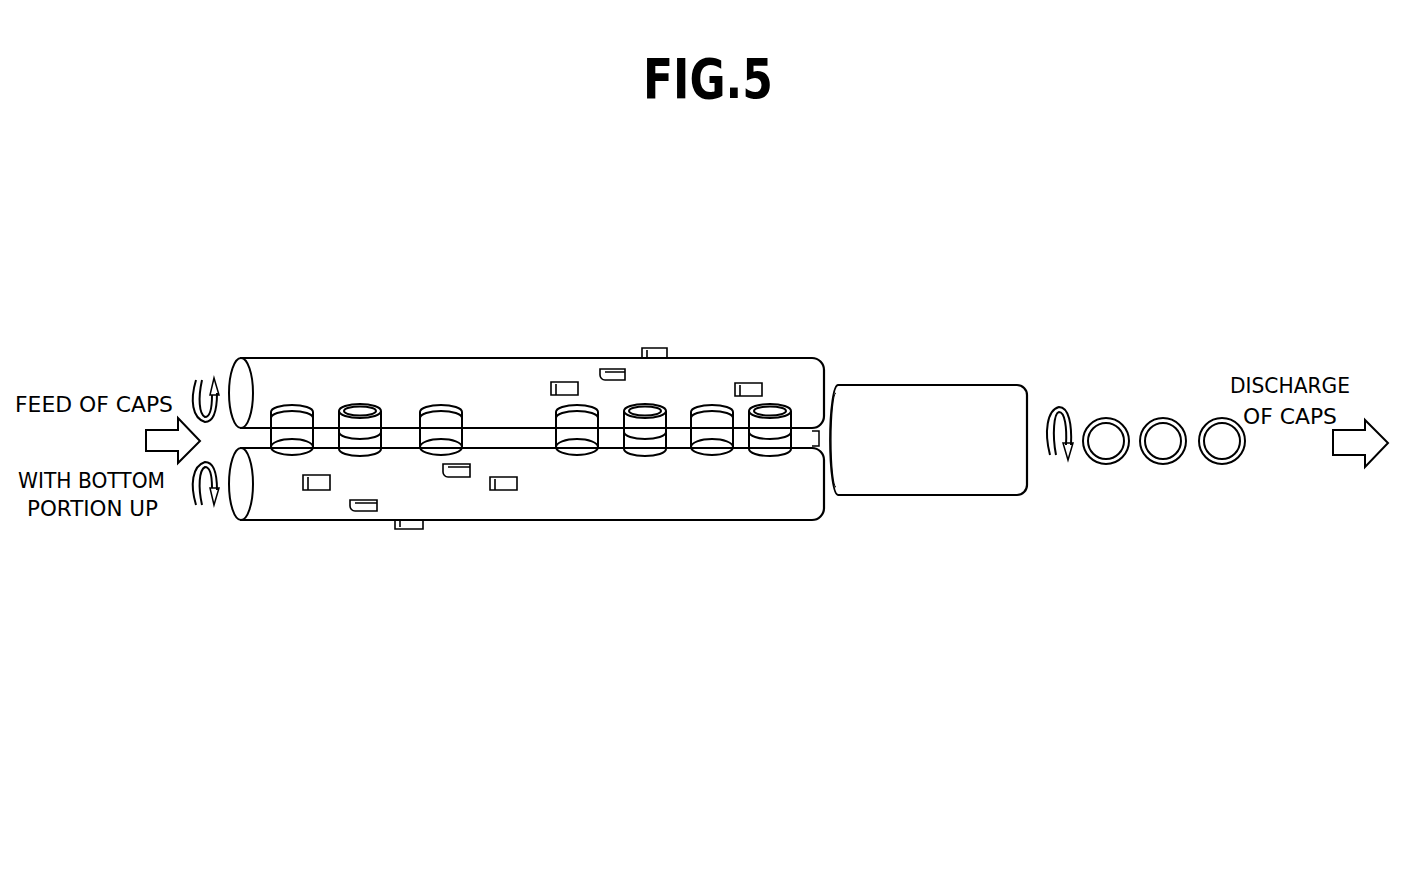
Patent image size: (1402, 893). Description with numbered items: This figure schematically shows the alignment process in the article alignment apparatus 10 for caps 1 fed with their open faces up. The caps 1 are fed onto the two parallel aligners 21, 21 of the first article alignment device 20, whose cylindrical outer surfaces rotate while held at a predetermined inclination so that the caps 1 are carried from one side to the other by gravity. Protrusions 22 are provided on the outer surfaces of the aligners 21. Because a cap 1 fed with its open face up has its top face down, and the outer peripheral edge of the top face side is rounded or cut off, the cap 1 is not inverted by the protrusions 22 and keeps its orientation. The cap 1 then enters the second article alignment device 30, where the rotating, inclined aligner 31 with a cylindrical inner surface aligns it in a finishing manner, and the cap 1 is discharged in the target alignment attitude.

The cap 1 is at (290, 405).
The article alignment apparatus 10 is at (511, 292).
The first article alignment device 20 is at (363, 346).
The aligner 21 is at (450, 370).
The protrusion 22 is at (614, 366).
The second article alignment device 30 is at (928, 362).
The aligner 31 is at (978, 403).